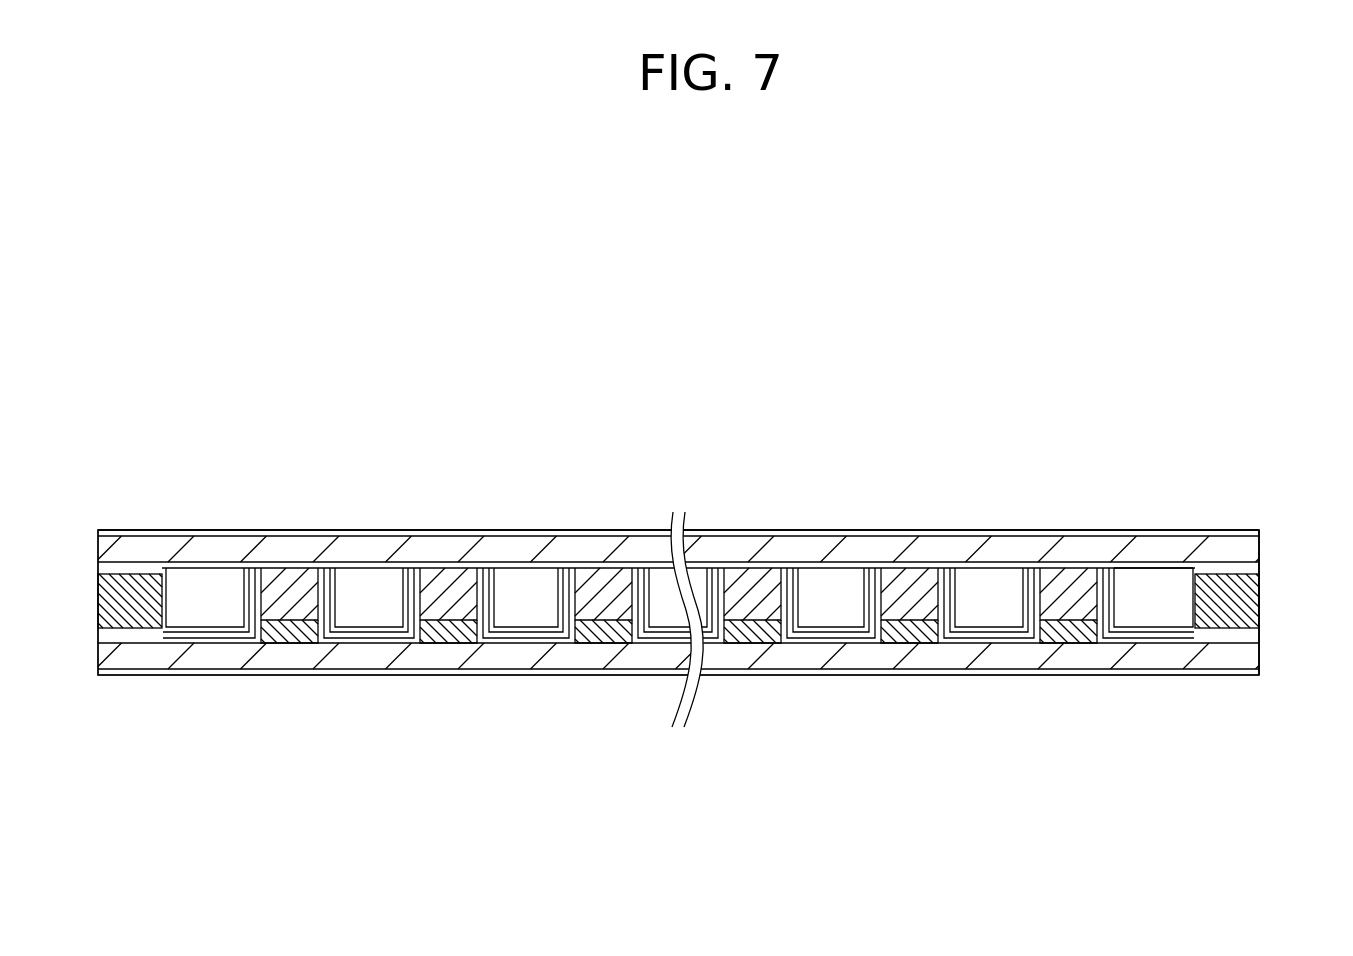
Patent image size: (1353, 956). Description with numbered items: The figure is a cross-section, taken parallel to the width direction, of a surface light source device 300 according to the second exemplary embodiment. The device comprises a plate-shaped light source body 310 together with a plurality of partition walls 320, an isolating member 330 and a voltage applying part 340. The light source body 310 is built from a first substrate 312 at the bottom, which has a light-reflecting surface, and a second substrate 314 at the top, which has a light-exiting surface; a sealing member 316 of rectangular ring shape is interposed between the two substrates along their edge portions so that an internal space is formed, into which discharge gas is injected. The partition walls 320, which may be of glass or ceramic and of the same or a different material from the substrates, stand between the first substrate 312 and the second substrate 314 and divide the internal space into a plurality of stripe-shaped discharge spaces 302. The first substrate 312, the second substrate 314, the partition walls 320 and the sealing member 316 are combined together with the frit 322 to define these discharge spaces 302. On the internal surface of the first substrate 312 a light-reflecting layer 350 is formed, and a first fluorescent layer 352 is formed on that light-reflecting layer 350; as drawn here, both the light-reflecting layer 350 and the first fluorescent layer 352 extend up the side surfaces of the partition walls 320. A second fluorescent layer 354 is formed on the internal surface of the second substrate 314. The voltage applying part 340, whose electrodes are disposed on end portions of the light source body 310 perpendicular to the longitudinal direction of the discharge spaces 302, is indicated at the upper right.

The surface light source device 300 is at (879, 235).
The discharge spaces 302 is at (1140, 610).
The light source body 310 is at (637, 473).
The first substrate 312 is at (582, 655).
The second substrate 314 is at (547, 545).
The sealing member 316 is at (134, 575).
The partition wall 320 is at (446, 607).
The frit 322 is at (1253, 567).
The isolating member 330 is at (285, 633).
The voltage applying part 340 is at (1175, 516).
The light-reflecting layer 350 is at (867, 640).
The first fluorescent layer 352 is at (803, 630).
The second fluorescent layer 354 is at (826, 562).